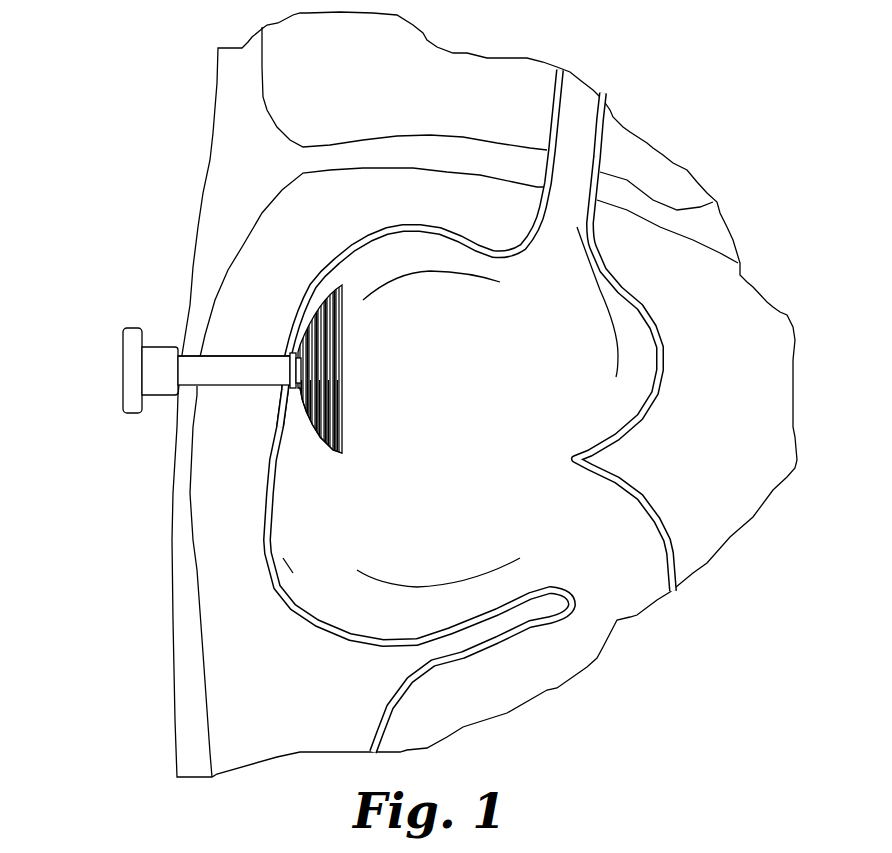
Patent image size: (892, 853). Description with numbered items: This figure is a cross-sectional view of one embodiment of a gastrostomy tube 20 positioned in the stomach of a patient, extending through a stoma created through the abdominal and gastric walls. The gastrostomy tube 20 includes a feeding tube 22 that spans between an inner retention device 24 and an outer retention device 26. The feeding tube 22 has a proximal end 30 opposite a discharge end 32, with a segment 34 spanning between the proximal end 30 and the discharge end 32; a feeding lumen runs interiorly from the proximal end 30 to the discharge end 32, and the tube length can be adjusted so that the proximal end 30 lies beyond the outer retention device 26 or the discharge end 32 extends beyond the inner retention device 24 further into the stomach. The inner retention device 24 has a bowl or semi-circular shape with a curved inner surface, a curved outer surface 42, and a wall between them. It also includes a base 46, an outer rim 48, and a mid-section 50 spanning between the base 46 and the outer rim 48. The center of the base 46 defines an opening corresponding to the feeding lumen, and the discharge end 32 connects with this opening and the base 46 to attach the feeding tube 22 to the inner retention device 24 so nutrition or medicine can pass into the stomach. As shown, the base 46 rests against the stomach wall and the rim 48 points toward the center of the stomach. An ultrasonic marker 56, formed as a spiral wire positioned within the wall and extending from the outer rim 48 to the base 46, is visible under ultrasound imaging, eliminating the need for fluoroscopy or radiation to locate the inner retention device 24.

The gastrostomy tube 20 is at (169, 368).
The feeding tube 22 is at (210, 375).
The inner retention device 24 is at (322, 393).
The outer retention device 26 is at (122, 365).
The proximal end 30 is at (197, 365).
The discharge end 32 is at (280, 370).
The segment 34 is at (228, 355).
The curved outer surface 42 is at (322, 442).
The base 46 is at (275, 412).
The outer rim 48 is at (358, 368).
The mid-section 50 is at (305, 290).
The ultrasonic marker 56 is at (348, 426).